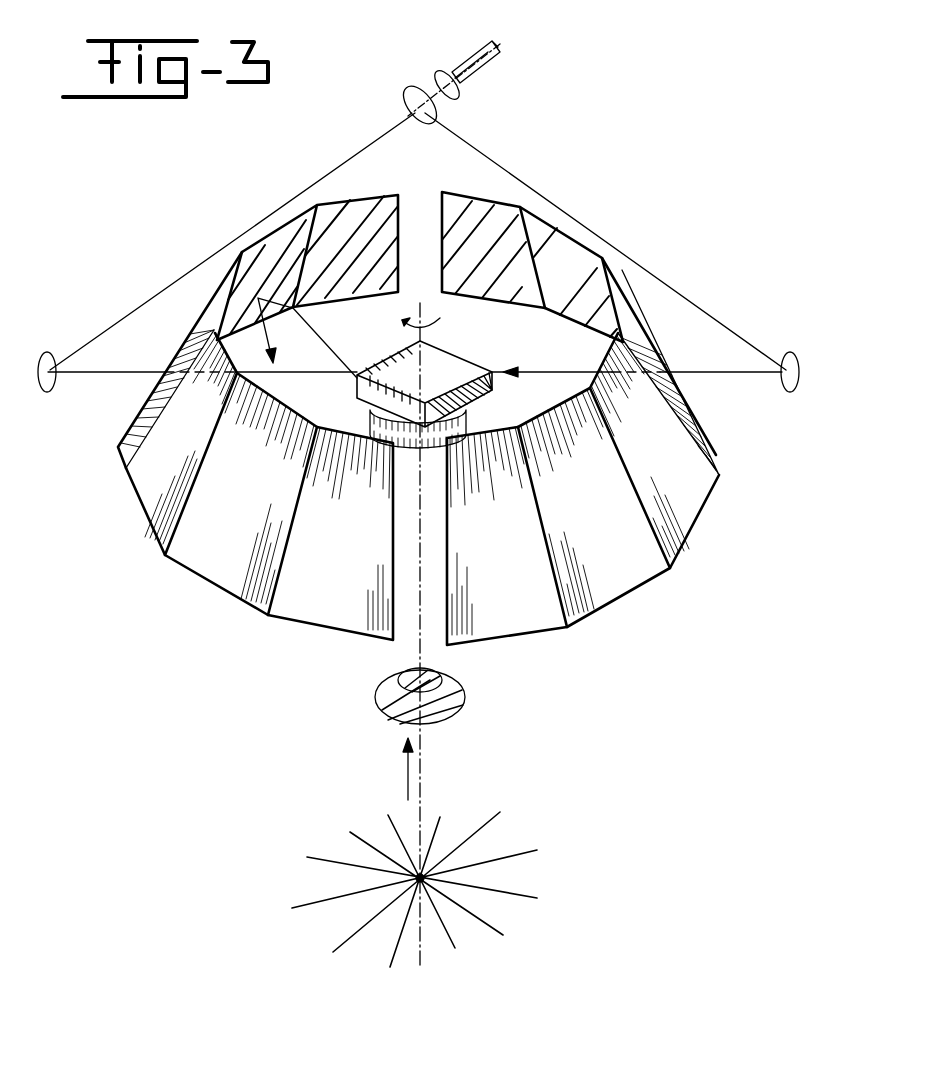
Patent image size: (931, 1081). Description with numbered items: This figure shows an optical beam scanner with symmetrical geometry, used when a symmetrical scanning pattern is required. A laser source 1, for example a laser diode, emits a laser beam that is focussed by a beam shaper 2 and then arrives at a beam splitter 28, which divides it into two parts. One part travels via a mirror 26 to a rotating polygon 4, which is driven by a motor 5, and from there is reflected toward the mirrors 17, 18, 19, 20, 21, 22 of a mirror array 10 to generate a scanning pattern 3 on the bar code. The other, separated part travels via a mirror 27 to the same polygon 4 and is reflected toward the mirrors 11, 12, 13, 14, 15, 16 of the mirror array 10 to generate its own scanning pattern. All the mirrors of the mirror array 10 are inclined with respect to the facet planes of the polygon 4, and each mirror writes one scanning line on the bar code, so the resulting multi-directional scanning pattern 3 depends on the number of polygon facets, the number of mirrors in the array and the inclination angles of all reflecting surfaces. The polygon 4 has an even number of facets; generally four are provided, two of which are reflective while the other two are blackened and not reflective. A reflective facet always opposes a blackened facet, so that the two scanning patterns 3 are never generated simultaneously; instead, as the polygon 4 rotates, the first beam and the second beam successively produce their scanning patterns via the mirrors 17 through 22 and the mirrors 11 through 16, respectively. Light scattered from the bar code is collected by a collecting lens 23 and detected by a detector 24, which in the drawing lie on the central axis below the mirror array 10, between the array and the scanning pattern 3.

The laser source 1 is at (468, 60).
The beam shaper 2 is at (446, 72).
The beam splitter 28 is at (413, 90).
The mirror array 10 is at (420, 203).
The mirror 22 is at (386, 206).
The mirror 11 is at (474, 206).
The mirror 12 is at (578, 318).
The mirror 13 is at (655, 350).
The mirror 20 is at (192, 330).
The mirror 21 is at (294, 309).
The rotating polygon 4 is at (452, 364).
The motor 5 is at (420, 450).
The mirror 26 is at (44, 351).
The mirror 27 is at (792, 352).
The mirror 19 is at (150, 518).
The mirror 18 is at (215, 588).
The mirror 17 is at (343, 634).
The mirror 16 is at (528, 633).
The mirror 15 is at (600, 596).
The mirror 14 is at (690, 524).
The collecting lens 23 is at (455, 702).
The detector 24 is at (440, 676).
The scanning pattern 3 is at (496, 896).